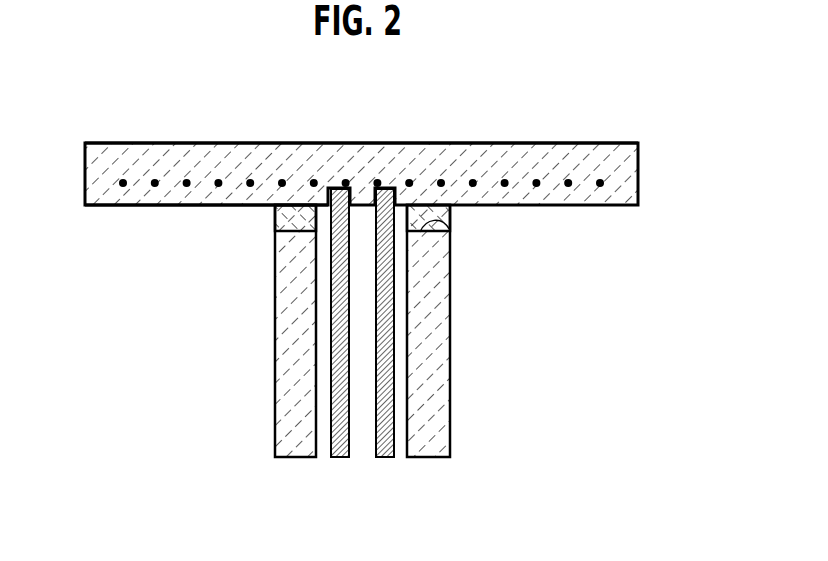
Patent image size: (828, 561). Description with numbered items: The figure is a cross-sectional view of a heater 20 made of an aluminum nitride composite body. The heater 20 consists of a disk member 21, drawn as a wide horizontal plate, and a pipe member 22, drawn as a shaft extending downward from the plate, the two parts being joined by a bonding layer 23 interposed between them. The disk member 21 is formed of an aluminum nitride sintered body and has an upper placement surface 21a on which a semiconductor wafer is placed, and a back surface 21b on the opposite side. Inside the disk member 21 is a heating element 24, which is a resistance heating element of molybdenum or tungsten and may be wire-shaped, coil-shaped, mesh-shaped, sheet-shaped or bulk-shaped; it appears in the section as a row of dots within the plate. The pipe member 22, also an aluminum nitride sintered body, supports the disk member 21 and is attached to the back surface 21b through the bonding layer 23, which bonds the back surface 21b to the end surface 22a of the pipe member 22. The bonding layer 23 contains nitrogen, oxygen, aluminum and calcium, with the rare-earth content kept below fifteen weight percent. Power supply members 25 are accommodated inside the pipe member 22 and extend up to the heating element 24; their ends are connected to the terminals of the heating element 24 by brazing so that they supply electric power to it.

The heater 20 is at (567, 126).
The disk member 21 is at (630, 175).
The placement surface 21a is at (172, 143).
The back surface 21b is at (133, 206).
The pipe member 22 is at (282, 328).
The end surface 22a is at (449, 229).
The bonding layer 23 is at (278, 220).
The heating element 24 is at (482, 181).
The power supply members 25 is at (340, 458).